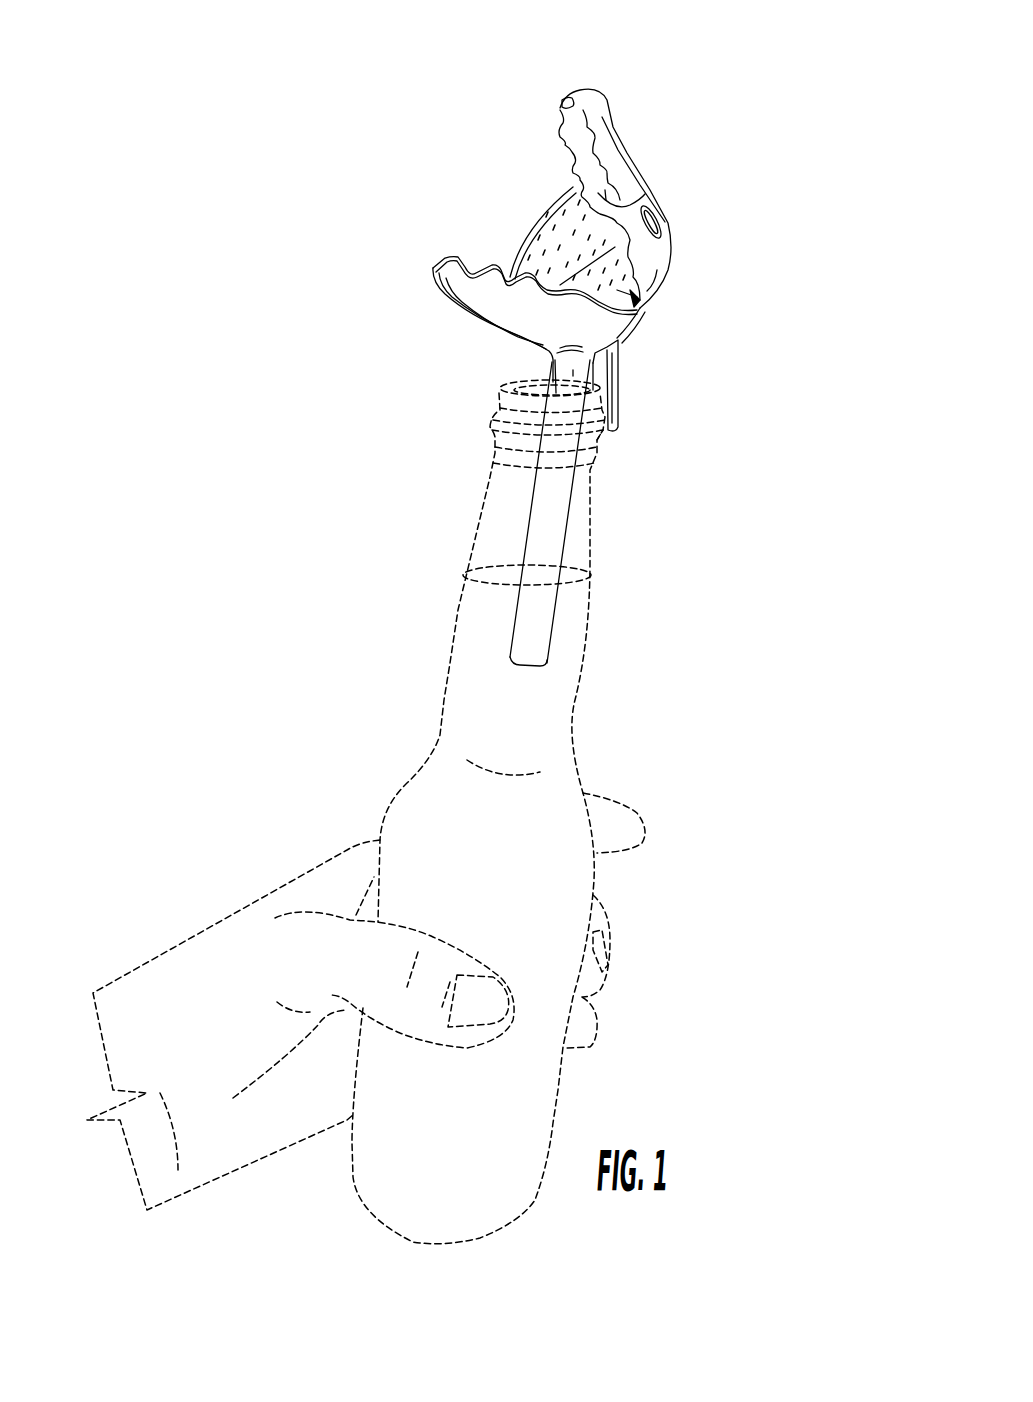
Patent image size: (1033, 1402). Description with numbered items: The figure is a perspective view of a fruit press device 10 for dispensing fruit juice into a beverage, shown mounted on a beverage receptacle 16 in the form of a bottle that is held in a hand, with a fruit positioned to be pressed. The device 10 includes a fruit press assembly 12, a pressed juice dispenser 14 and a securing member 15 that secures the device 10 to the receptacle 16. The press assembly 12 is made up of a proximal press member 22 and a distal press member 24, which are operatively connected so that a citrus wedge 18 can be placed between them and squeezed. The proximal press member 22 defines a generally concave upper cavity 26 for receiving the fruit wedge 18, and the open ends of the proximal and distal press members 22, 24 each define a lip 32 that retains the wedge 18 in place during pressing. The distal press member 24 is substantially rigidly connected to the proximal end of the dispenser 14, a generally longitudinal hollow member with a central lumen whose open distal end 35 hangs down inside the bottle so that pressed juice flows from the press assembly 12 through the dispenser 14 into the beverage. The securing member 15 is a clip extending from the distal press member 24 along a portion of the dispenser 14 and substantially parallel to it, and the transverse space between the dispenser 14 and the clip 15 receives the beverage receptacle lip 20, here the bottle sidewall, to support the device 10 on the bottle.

The fruit press device 10 is at (752, 163).
The fruit press assembly 12 is at (667, 253).
The pressed juice dispenser 14 is at (570, 377).
The securing member 15 is at (617, 392).
The beverage receptacle 16 is at (572, 624).
The citrus wedge 18 is at (550, 233).
The beverage receptacle lip 20 is at (587, 427).
The proximal press member 22 is at (608, 118).
The distal press member 24 is at (468, 290).
The upper cavity 26 is at (645, 194).
The lip 32 is at (568, 96).
The distal end 35 is at (515, 658).